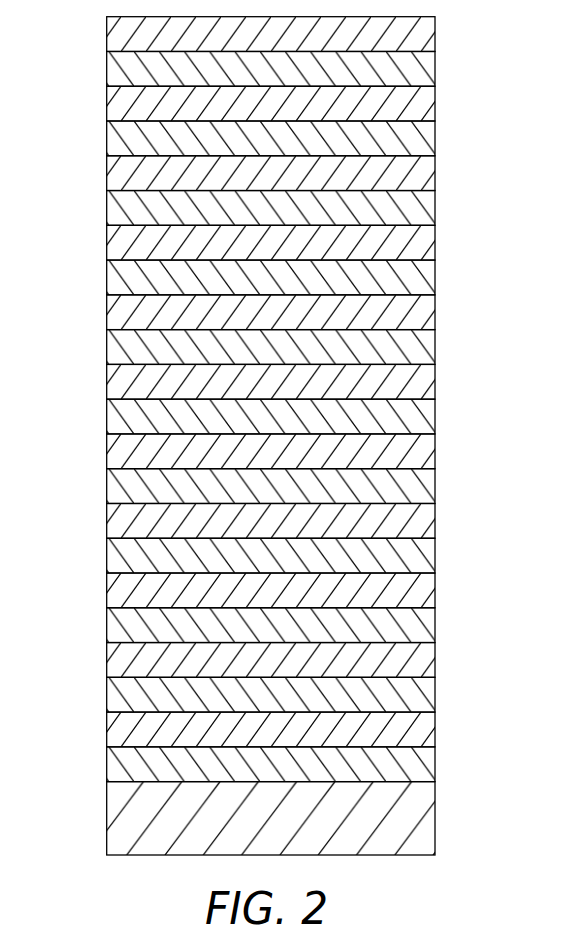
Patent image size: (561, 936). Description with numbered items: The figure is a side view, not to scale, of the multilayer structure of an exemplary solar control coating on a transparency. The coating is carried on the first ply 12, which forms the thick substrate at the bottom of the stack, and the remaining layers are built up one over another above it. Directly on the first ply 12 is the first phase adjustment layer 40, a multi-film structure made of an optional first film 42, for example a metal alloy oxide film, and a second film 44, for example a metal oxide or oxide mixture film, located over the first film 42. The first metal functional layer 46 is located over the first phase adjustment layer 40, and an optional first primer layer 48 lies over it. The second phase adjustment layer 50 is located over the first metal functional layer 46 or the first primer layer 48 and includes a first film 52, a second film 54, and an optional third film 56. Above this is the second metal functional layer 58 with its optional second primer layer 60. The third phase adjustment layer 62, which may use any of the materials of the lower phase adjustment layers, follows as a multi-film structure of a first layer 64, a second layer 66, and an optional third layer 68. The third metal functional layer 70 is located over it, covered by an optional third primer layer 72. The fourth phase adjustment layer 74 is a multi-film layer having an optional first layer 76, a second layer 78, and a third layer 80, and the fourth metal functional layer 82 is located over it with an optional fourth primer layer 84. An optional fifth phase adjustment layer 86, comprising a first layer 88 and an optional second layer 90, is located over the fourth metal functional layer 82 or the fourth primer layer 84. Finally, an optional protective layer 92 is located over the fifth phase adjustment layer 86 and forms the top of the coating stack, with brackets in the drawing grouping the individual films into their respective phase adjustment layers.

The first ply 12 is at (428, 818).
The first phase adjustment layer 40 is at (268, 747).
The first film 42 is at (428, 765).
The second film 44 is at (428, 730).
The first metal functional layer 46 is at (428, 695).
The first primer layer 48 is at (428, 661).
The second phase adjustment layer 50 is at (268, 590).
The first film 52 is at (428, 626).
The second film 54 is at (428, 591).
The third film 56 is at (428, 556).
The second metal functional layer 58 is at (428, 522).
The second primer layer 60 is at (428, 487).
The third phase adjustment layer 62 is at (268, 416).
The first layer 64 is at (428, 452).
The second layer 66 is at (428, 417).
The third layer 68 is at (428, 382).
The third metal functional layer 70 is at (428, 348).
The third primer layer 72 is at (428, 313).
The fourth phase adjustment layer 74 is at (268, 243).
The first layer 76 is at (428, 278).
The second layer 78 is at (428, 243).
The third layer 80 is at (428, 209).
The fourth metal functional layer 82 is at (428, 174).
The fourth primer layer 84 is at (428, 139).
The fifth phase adjustment layer 86 is at (268, 86).
The first layer 88 is at (428, 104).
The second layer 90 is at (428, 70).
The protective layer 92 is at (428, 35).